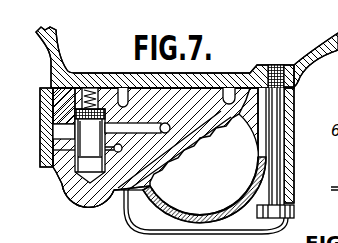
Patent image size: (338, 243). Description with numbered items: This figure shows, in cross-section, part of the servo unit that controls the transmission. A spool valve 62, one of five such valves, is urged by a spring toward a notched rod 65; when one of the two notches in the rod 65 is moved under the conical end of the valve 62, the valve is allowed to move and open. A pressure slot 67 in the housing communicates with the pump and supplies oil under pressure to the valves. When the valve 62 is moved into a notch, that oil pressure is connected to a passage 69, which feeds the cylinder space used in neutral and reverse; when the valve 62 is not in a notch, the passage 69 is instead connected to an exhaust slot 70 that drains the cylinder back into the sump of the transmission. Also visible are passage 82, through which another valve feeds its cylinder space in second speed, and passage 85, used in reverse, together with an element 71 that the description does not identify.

The spool valve 62 is at (92, 162).
The rod 65 is at (86, 200).
The pressure slot 67 is at (53, 153).
The passage 69 is at (55, 126).
The exhaust slot 70 is at (53, 107).
The casing 71 is at (337, 157).
The passage 82 is at (123, 92).
The passage 85 is at (228, 93).